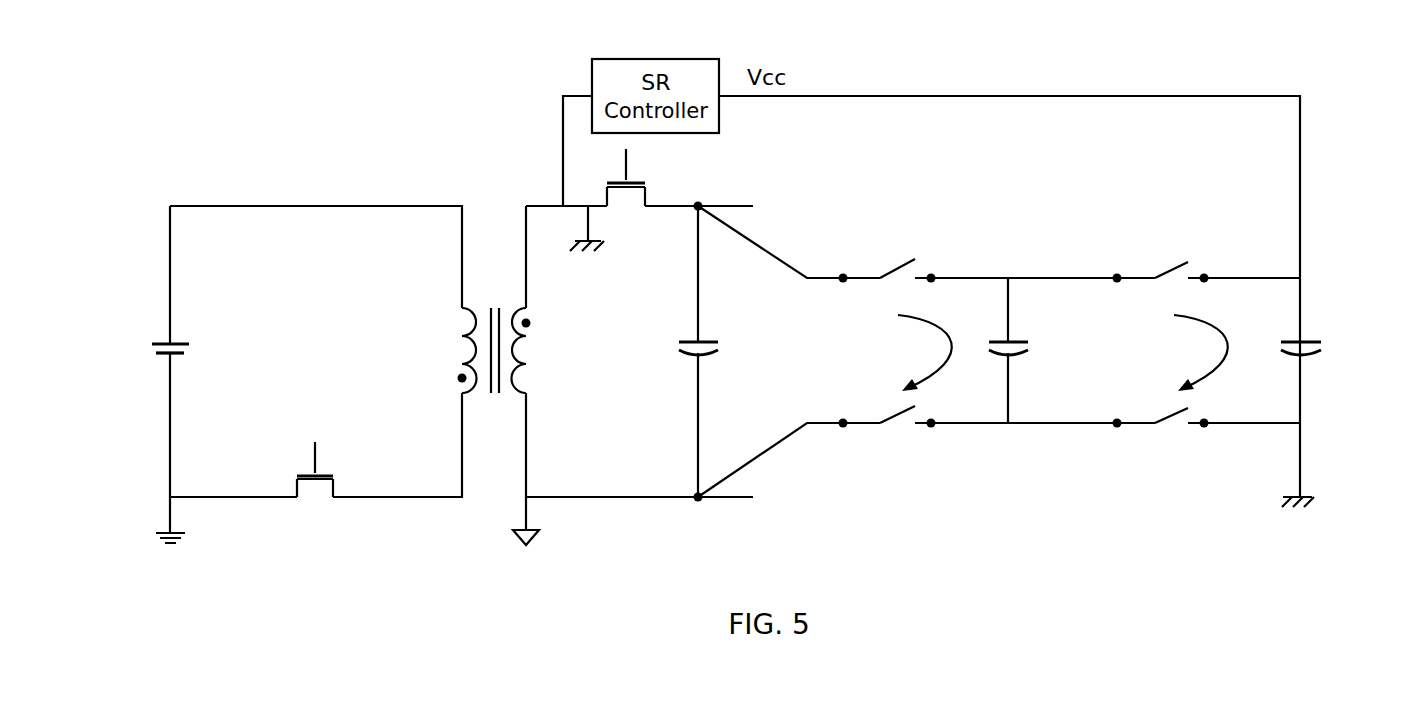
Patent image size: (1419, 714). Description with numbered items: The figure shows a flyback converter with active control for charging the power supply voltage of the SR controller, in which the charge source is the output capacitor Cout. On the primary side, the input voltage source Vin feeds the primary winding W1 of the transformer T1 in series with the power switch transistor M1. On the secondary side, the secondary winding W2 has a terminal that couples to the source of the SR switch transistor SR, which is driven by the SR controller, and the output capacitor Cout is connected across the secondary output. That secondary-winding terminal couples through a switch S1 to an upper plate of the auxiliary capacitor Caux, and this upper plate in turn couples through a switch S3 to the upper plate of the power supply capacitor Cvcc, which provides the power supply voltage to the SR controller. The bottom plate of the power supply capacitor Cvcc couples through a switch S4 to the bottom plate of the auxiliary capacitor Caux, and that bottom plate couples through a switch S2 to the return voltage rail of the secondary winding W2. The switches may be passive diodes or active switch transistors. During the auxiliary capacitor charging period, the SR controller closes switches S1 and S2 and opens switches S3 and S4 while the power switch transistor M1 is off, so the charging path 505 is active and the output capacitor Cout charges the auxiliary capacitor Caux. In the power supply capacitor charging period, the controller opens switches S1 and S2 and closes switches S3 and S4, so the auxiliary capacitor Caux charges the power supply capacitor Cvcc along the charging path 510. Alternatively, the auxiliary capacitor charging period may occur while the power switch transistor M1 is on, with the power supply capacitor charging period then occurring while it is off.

The charging path 505 is at (937, 329).
The charging path 510 is at (1213, 330).
The input voltage source Vin is at (155, 335).
The power switch transistor M1 is at (315, 486).
The transformer T1 is at (494, 336).
The primary winding W1 is at (445, 350).
The secondary winding W2 is at (543, 350).
The SR switch transistor SR is at (627, 193).
The output capacitor Cout is at (727, 349).
The auxiliary capacitor Caux is at (1038, 349).
The power supply capacitor Cvcc is at (1330, 349).
The switch S1 is at (887, 259).
The switch S2 is at (887, 432).
The switch S3 is at (1161, 262).
The switch S4 is at (1161, 435).